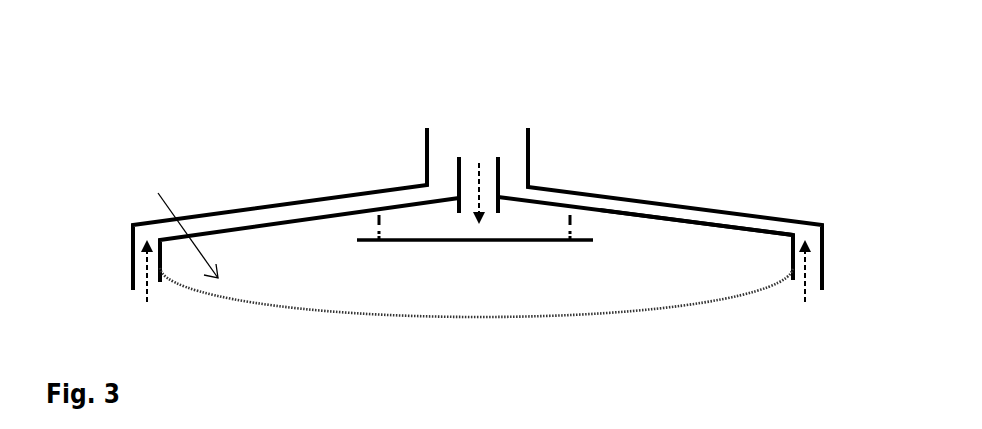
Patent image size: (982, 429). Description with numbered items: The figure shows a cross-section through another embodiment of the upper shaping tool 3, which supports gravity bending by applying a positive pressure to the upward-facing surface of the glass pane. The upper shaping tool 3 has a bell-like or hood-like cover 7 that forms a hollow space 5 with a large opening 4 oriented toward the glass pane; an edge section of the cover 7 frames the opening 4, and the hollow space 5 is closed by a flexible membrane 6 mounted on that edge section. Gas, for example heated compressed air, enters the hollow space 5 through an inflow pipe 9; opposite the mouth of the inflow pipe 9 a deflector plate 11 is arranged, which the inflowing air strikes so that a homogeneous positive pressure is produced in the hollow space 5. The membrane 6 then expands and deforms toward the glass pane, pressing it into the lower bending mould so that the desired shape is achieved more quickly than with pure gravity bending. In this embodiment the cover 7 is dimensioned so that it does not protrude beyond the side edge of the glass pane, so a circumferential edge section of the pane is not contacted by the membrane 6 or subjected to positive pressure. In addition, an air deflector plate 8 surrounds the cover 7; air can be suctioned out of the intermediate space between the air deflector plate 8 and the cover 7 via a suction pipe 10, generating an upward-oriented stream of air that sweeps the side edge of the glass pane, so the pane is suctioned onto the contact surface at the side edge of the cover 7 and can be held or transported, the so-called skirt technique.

The upper shaping tool 3 is at (694, 162).
The opening 4 is at (476, 236).
The hollow space 5 is at (297, 247).
The membrane 6 is at (743, 297).
The cover 7 is at (688, 223).
The air deflector plate 8 is at (133, 224).
The inflow pipe 9 is at (487, 180).
The suction pipe 10 is at (438, 165).
The deflector plate 11 is at (582, 237).